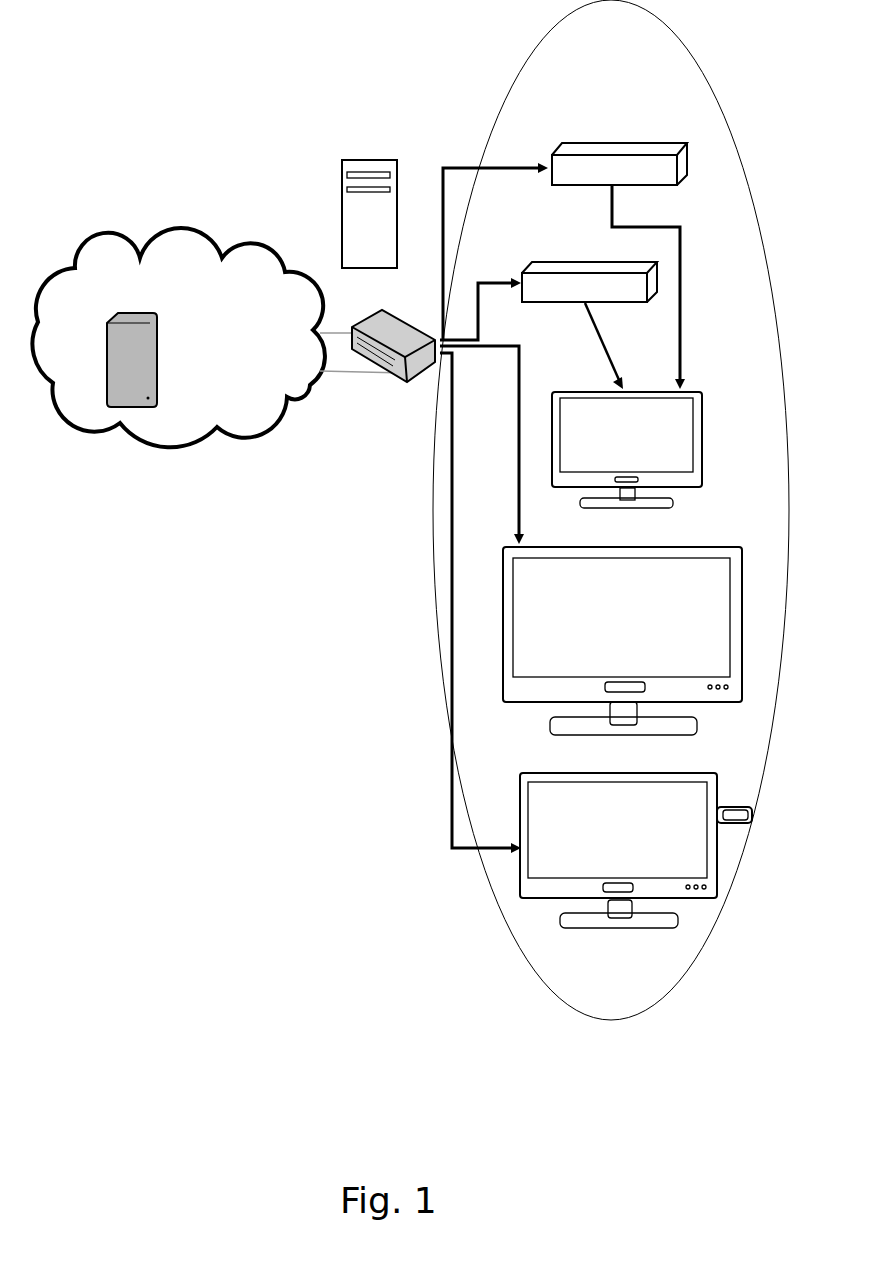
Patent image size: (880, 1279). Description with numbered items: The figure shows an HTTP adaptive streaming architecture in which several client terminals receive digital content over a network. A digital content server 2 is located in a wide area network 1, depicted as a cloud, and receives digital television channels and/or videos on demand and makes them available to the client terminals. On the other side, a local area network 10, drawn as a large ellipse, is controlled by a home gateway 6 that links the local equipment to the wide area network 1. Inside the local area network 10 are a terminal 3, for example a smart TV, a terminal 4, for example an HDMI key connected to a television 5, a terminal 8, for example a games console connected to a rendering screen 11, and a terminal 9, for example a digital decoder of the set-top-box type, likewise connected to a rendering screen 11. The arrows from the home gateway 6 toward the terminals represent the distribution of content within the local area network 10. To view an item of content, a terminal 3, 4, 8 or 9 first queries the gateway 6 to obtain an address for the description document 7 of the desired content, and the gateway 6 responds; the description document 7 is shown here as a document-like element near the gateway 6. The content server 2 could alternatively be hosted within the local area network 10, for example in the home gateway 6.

The wide area network 1 is at (165, 193).
The digital content server 2 is at (163, 310).
The terminal 3 is at (503, 610).
The terminal 4 is at (737, 823).
The television 5 is at (640, 928).
The home gateway 6 is at (402, 313).
The description document 7 is at (397, 183).
The terminal 8 is at (683, 143).
The terminal 9 is at (652, 297).
The local area network 10 is at (437, 415).
The rendering screen 11 is at (703, 433).